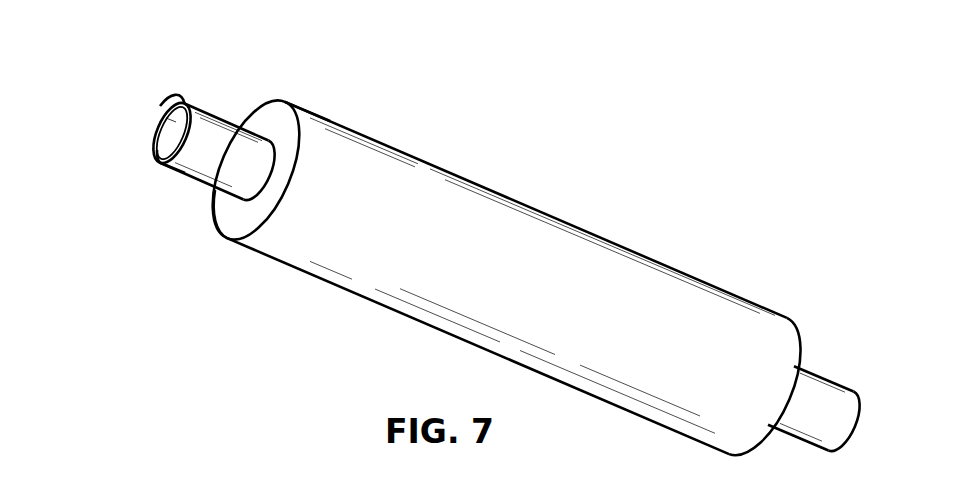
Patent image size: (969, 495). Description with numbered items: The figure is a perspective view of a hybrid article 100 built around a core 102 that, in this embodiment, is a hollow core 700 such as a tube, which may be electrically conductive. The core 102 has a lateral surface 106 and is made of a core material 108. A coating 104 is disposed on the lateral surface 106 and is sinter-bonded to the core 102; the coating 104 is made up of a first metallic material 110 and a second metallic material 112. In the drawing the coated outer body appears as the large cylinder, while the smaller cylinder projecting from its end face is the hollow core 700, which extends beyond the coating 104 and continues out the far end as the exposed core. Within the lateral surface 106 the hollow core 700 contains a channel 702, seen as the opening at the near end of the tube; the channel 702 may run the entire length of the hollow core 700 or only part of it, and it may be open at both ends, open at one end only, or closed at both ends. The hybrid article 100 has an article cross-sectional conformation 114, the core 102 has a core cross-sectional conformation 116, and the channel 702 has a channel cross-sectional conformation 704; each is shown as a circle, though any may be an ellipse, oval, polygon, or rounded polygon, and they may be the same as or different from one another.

The hybrid article 100 is at (526, 120).
The core 102 is at (179, 106).
The coating 104 is at (506, 217).
The lateral surface 106 is at (212, 134).
The core material 108 is at (148, 149).
The first metallic material 110 is at (222, 215).
The second metallic material 112 is at (232, 237).
The article cross-sectional conformation 114 is at (150, 100).
The core cross-sectional conformation 116 is at (279, 82).
The hollow core 700 is at (158, 167).
The channel 702 is at (168, 134).
The channel cross-sectional conformation 704 is at (146, 141).